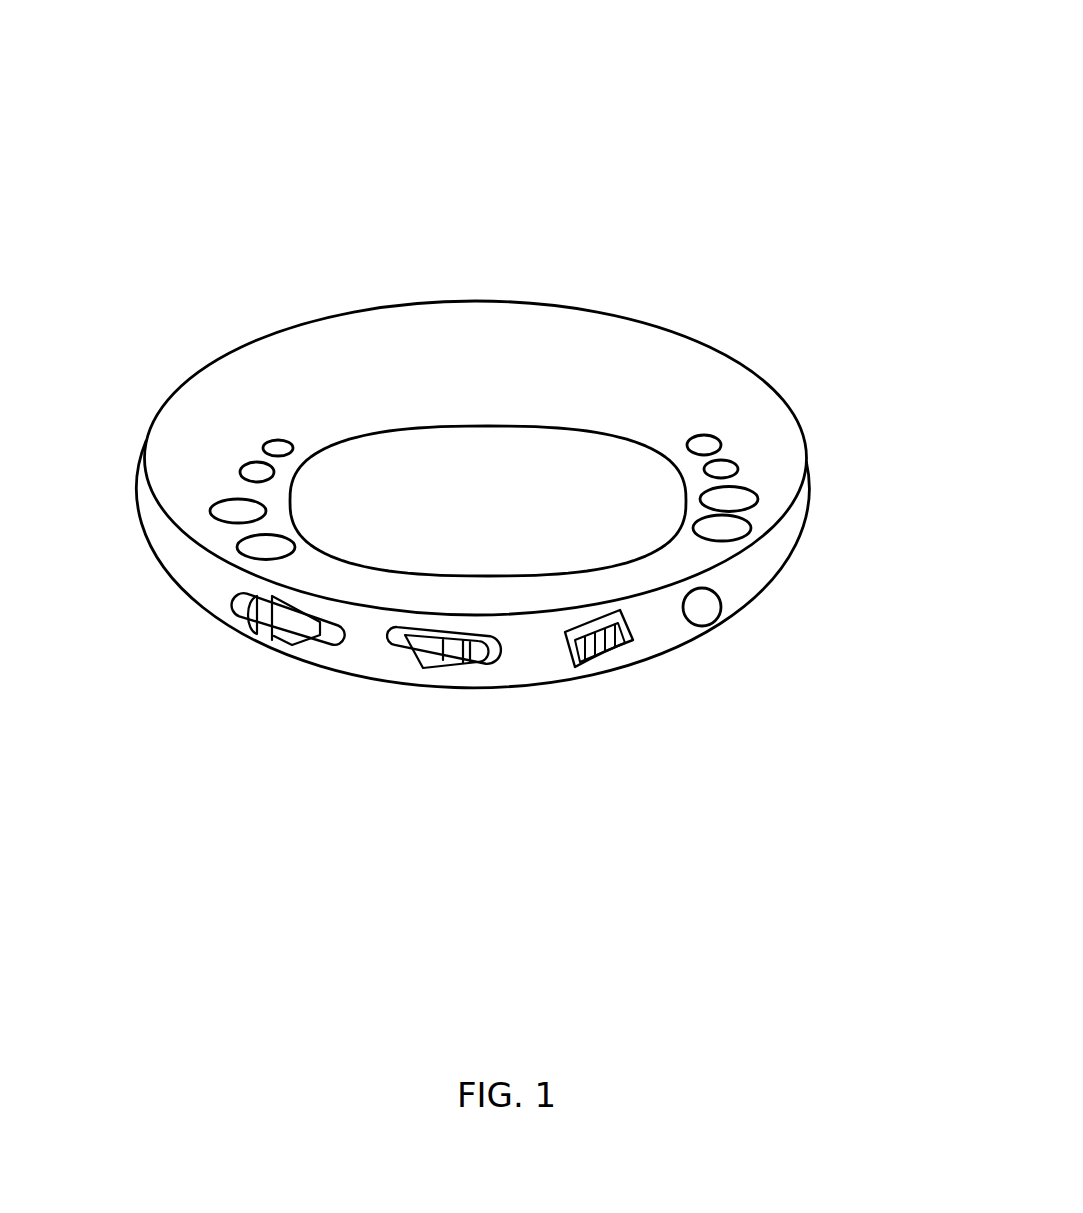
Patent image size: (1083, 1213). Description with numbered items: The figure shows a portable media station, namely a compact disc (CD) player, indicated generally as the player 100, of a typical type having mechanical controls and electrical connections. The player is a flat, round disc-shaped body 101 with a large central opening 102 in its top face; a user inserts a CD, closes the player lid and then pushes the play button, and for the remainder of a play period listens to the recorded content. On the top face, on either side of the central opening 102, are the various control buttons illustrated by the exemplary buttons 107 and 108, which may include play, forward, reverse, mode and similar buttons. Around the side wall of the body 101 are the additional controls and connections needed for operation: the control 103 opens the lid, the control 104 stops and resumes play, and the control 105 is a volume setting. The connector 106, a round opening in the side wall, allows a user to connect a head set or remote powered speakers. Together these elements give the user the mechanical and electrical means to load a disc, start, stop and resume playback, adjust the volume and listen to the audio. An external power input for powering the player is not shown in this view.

The ring-shaped device 100 is at (556, 149).
The annular body 101 is at (435, 292).
The central opening 102 is at (543, 453).
The control 103 is at (267, 633).
The control 104 is at (467, 668).
The control 105 is at (630, 643).
The connector 106 is at (713, 598).
The button 107 is at (743, 497).
The button 108 is at (237, 510).